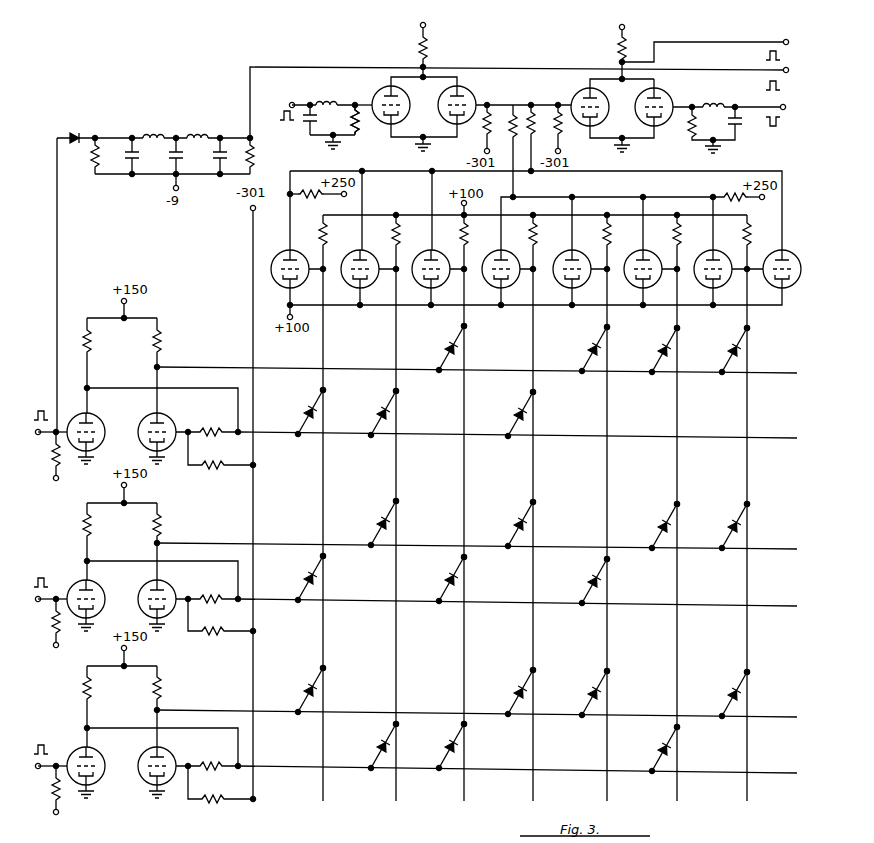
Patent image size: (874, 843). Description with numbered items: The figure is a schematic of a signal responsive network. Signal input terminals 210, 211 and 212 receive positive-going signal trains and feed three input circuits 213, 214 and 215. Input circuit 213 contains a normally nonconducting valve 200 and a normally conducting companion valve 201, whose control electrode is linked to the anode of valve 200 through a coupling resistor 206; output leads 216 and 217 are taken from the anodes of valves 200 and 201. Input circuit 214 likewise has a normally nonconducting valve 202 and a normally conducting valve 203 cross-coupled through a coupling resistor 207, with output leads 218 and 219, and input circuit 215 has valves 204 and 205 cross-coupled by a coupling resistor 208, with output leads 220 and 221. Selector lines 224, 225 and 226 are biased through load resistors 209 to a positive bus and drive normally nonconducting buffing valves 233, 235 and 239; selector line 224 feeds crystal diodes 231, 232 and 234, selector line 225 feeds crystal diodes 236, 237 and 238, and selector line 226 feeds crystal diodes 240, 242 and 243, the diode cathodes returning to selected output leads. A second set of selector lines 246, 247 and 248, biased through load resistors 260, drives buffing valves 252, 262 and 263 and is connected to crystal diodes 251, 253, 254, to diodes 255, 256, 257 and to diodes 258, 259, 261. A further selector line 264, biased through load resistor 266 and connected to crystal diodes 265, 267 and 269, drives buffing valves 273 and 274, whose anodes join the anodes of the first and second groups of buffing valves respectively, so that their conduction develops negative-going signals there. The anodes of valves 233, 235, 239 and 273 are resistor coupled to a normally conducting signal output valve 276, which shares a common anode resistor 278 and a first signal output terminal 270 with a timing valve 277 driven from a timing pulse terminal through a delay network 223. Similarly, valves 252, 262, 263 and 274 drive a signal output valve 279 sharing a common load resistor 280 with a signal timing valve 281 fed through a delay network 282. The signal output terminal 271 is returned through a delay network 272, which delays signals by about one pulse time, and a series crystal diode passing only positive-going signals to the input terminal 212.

The normally nonconducting valve 200 is at (96, 755).
The companion valve 201 is at (140, 781).
The normally nonconducting valve 202 is at (96, 587).
The normally conducting valve 203 is at (160, 583).
The normally nonconducting valve 204 is at (95, 418).
The normally conducting valve 205 is at (160, 415).
The coupling resistor 206 is at (214, 762).
The coupling resistor 207 is at (220, 590).
The coupling resistor 208 is at (220, 422).
The load resistors 209 is at (409, 234).
The signal input terminal 210 is at (44, 798).
The signal input terminal 211 is at (44, 631).
The signal input terminal 212 is at (45, 464).
The input circuit 213 is at (138, 700).
The input circuit 214 is at (138, 533).
The signal input circuit 215 is at (138, 366).
The output lead 216 is at (796, 772).
The output lead 217 is at (778, 713).
The signal output lead 218 is at (772, 603).
The output lead 219 is at (795, 550).
The signal output lead 220 is at (777, 434).
The signal output lead 221 is at (796, 371).
The delay network 223 is at (733, 98).
The selector line 224 is at (337, 782).
The selector line 225 is at (409, 782).
The selector line 226 is at (478, 782).
The crystal diode 231 is at (309, 689).
The crystal diode 232 is at (308, 578).
The buffing valve 233 is at (286, 252).
The crystal diode 234 is at (309, 410).
The buffing valve 235 is at (365, 251).
The crystal diode 236 is at (382, 747).
The diode 237 is at (382, 522).
The crystal diode 238 is at (382, 411).
The buffing valve 239 is at (446, 247).
The crystal diode 240 is at (450, 747).
The crystal diode 242 is at (449, 579).
The crystal diode 243 is at (449, 350).
The selector line 246 is at (533, 782).
The selector line 247 is at (607, 782).
The selector line 248 is at (677, 782).
The crystal diode 251 is at (519, 692).
The buffing valve 252 is at (516, 247).
The crystal diode 253 is at (519, 523).
The crystal diode 254 is at (519, 412).
The crystal diode 255 is at (593, 693).
The crystal diode 256 is at (592, 581).
The crystal diode 257 is at (592, 351).
The crystal diode 258 is at (662, 750).
The crystal diode 259 is at (663, 525).
The load resistors 260 is at (620, 234).
The crystal diode 261 is at (662, 352).
The buffing valve 262 is at (587, 246).
The buffing valve 263 is at (658, 246).
The selector line 264 is at (747, 790).
The crystal diode 265 is at (733, 694).
The load resistor 266 is at (762, 234).
The crystal diode 267 is at (733, 525).
The crystal diode 269 is at (732, 352).
The first signal output terminal 270 is at (789, 40).
The signal output terminal 271 is at (789, 68).
The delay network 272 is at (178, 116).
The buffing valve 273 is at (783, 252).
The buffing valve 274 is at (728, 246).
The signal output valve 276 is at (578, 96).
The timing valve 277 is at (662, 96).
The common anode resistor 278 is at (617, 45).
The signal output valve 279 is at (470, 96).
The common load resistor 280 is at (431, 47).
The signal timing valve 281 is at (370, 125).
The delay network 282 is at (348, 91).